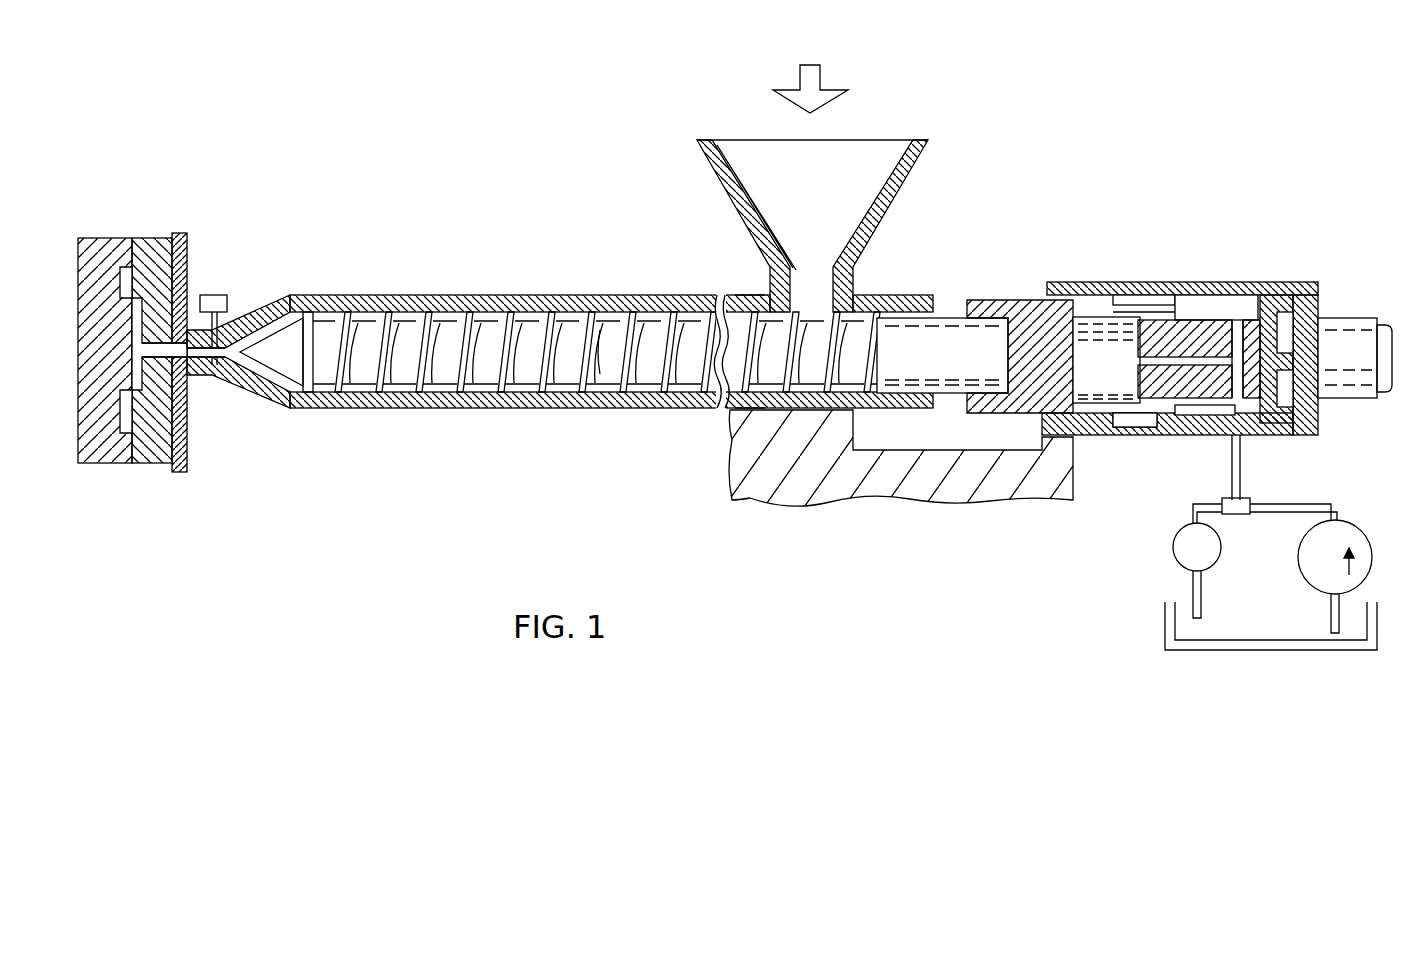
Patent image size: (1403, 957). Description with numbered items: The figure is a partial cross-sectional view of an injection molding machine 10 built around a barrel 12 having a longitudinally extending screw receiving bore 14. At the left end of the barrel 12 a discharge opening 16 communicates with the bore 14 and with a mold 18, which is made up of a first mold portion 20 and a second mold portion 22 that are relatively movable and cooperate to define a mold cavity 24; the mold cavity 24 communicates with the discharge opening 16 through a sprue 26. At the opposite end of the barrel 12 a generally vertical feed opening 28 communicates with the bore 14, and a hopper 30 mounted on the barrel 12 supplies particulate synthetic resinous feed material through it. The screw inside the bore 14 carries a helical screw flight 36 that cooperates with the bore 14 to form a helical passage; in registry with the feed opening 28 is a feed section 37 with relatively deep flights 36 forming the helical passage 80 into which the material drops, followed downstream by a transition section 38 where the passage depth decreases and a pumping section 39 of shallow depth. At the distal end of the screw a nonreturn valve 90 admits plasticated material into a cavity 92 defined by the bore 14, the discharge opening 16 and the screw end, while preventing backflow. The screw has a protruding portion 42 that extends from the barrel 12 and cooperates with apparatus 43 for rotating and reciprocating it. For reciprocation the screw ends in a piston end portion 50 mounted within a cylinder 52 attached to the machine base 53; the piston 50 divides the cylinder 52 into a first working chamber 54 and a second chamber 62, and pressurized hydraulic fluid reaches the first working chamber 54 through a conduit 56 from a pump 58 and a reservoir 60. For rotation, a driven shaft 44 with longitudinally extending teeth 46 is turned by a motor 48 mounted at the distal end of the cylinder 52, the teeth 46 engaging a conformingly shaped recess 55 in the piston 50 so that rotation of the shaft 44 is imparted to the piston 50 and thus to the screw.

The injection molding machine 10 is at (529, 298).
The barrel 12 is at (611, 344).
The screw receiving bore 14 is at (592, 359).
The discharge opening 16 is at (214, 325).
The mold 18 is at (169, 355).
The first mold portion 20 is at (150, 464).
The second mold portion 22 is at (104, 463).
The mold cavity 24 is at (142, 388).
The sprue 26 is at (168, 358).
The feed opening 28 is at (769, 188).
The hopper 30 is at (717, 183).
The helical screw flight 36 is at (480, 345).
The feed section 37 is at (748, 312).
The transition section 38 is at (603, 370).
The pumping section 39 is at (495, 392).
The protruding screw portion 42 is at (947, 318).
The apparatus for rotating and reciprocating the screw 43 is at (1182, 358).
The driven shaft 44 is at (1207, 327).
The longitudinally extending teeth 46 is at (1195, 440).
The motor 48 is at (1345, 330).
The piston end portion 50 is at (1018, 299).
The cylinder 52 is at (1097, 281).
The machine base 53 is at (935, 500).
The first working chamber 54 is at (1250, 290).
The recess 55 is at (1092, 337).
The conduit 56 is at (1241, 473).
The pump 58 is at (1304, 570).
The reservoir 60 is at (1265, 652).
The second chamber 62 is at (1128, 422).
The helical passage 80 is at (748, 414).
The nonreturn valve 90 is at (308, 395).
The cavity 92 is at (268, 297).